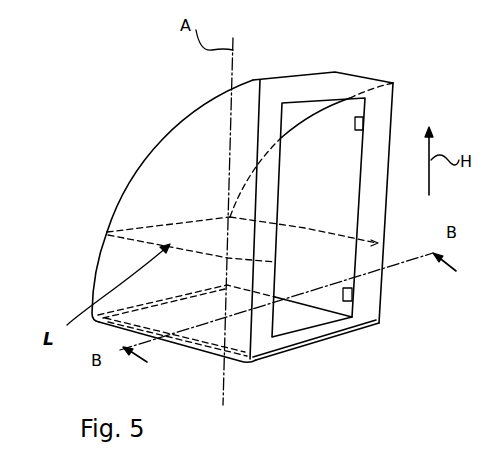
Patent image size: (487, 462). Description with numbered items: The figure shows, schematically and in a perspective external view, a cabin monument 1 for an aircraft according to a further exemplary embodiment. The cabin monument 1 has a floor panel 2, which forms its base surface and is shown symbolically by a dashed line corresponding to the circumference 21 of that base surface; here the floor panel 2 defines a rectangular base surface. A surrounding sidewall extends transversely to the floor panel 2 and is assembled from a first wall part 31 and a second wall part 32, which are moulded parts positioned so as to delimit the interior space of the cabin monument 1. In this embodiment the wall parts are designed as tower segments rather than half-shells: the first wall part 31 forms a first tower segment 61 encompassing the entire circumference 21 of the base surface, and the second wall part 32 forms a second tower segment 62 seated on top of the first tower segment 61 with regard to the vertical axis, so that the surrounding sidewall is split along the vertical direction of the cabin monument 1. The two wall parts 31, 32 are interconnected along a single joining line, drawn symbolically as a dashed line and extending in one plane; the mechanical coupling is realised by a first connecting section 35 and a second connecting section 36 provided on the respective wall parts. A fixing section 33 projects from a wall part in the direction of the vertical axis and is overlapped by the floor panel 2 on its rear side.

The cabin monument 1 is at (388, 62).
The floor panel 2 is at (333, 330).
The circumference 21 is at (198, 342).
The first wall part 31 is at (110, 273).
The second wall part 32 is at (173, 143).
The fixing section 33 is at (265, 342).
The first connecting section 35 is at (108, 233).
The second connecting section 36 is at (162, 229).
The first tower segment 61 is at (380, 293).
The second tower segment 62 is at (390, 107).